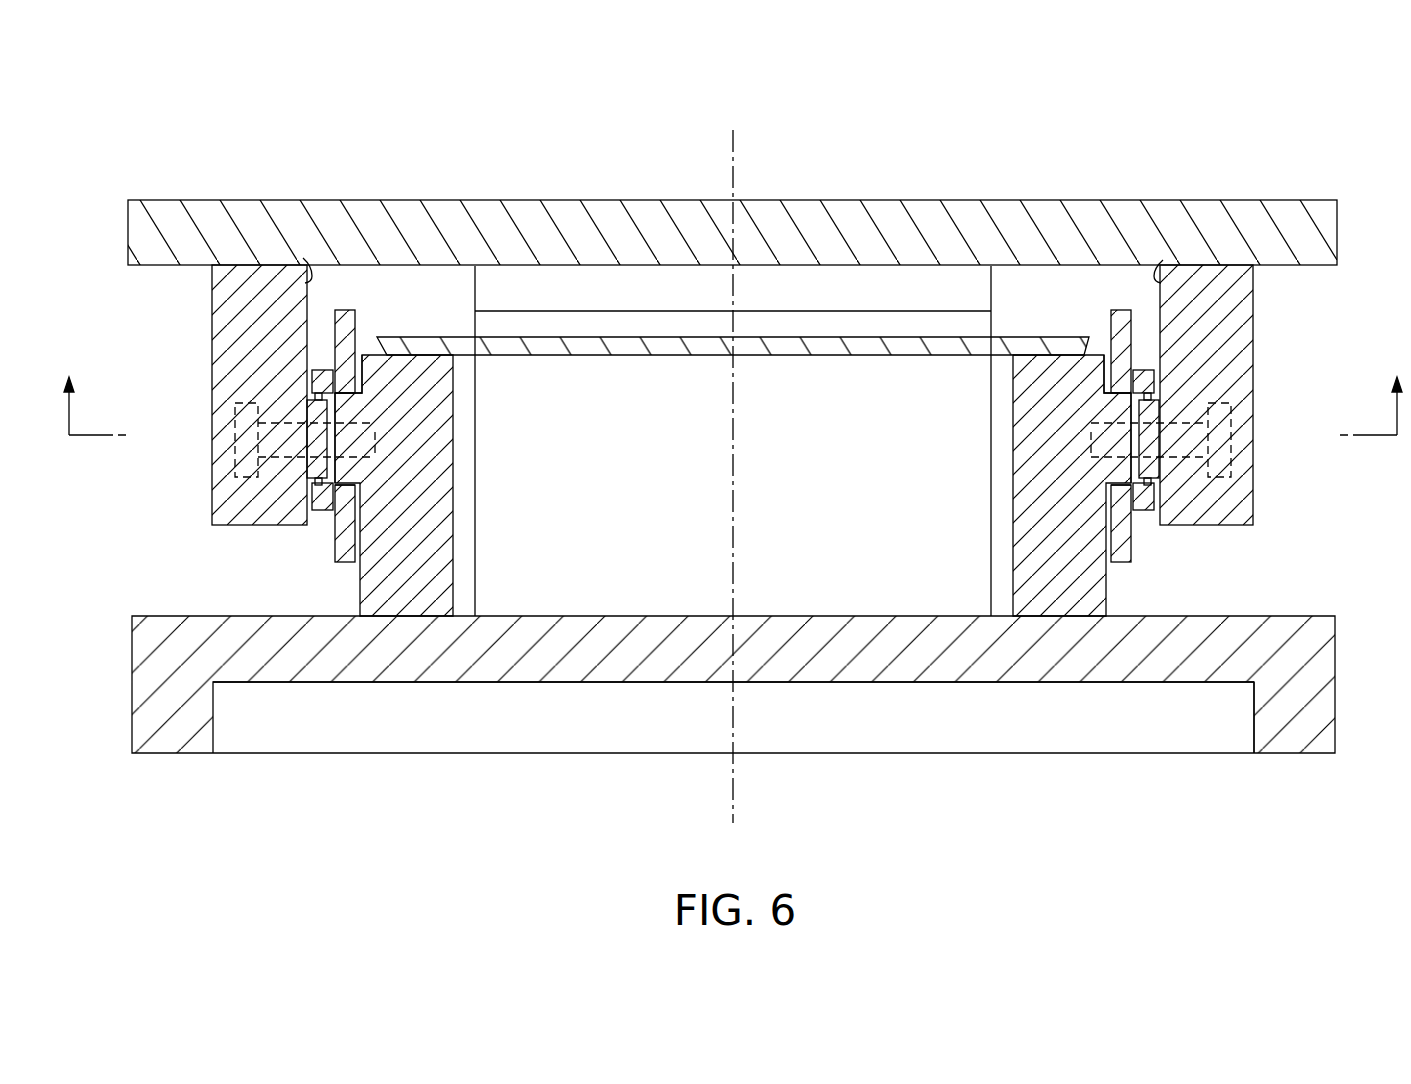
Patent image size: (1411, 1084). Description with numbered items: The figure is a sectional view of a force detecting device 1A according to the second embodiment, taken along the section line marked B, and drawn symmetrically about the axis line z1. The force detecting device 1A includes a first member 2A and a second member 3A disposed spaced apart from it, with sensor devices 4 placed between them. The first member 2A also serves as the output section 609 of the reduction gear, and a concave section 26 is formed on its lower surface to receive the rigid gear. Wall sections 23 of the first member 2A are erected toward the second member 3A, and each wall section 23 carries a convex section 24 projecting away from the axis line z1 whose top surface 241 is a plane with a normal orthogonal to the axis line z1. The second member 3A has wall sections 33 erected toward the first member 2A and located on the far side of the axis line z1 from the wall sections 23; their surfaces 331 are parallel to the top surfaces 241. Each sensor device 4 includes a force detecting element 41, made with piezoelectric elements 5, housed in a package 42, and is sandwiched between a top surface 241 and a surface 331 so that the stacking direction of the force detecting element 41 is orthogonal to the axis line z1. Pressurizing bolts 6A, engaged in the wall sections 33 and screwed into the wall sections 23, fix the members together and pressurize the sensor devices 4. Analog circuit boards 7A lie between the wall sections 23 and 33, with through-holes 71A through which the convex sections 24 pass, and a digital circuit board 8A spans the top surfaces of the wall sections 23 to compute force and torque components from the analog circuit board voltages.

The force detecting device 1A is at (1144, 128).
The first member 2A is at (930, 660).
The concave section 26 is at (633, 740).
The output section 609 is at (1313, 723).
The second member 3A is at (545, 200).
The wall section 33 is at (232, 300).
The surface 331 is at (303, 258).
The sensor device 4 is at (322, 360).
The force detecting element 41 is at (318, 462).
The piezoelectric element 5 is at (746, 505).
The package 42 is at (324, 492).
The pressurizing bolt 6A is at (235, 403).
The analog circuit board 7A is at (737, 520).
The through-hole 71A is at (352, 478).
The digital circuit board 8A is at (1052, 337).
The wall section 23 is at (440, 540).
The convex section 24 is at (347, 405).
The top surface 241 is at (335, 465).
The axis line z1 is at (736, 796).
The section line B is at (733, 393).